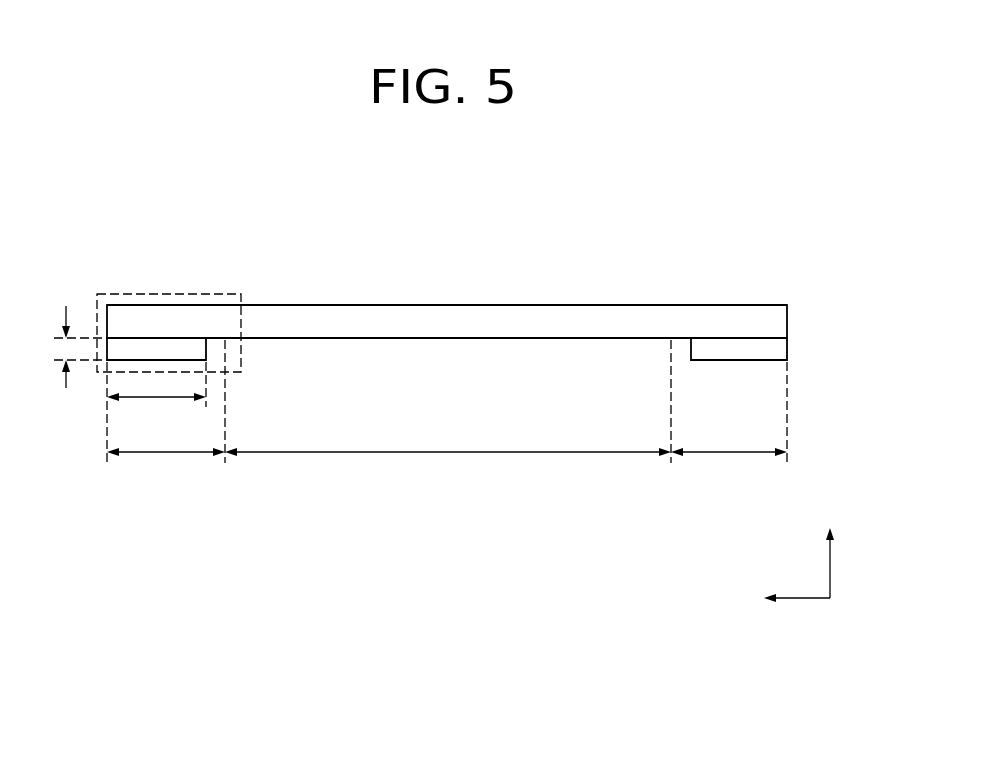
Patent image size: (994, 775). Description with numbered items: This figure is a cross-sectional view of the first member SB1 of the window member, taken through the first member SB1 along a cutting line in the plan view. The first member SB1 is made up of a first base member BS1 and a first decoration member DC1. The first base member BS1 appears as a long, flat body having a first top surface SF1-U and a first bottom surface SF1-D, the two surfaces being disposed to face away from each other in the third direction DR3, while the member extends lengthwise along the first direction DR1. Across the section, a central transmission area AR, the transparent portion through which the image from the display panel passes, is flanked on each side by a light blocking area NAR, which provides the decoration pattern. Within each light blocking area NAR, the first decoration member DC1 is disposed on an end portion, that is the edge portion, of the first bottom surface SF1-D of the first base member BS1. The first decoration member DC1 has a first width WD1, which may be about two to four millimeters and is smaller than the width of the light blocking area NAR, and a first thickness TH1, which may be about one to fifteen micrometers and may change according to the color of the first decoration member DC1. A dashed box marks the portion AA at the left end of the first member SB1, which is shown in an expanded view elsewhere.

The first member SB1 is at (713, 232).
The first base member BS1 is at (780, 318).
The first decoration member DC1 is at (780, 346).
The first top surface SF1-U is at (592, 304).
The first bottom surface SF1-D is at (592, 339).
The portion AA is at (192, 292).
The first thickness TH1 is at (61, 347).
The first width WD1 is at (156, 412).
The light blocking area NAR is at (447, 410).
The transmission area AR is at (448, 464).
The first direction DR1 is at (774, 599).
The third direction DR3 is at (831, 550).